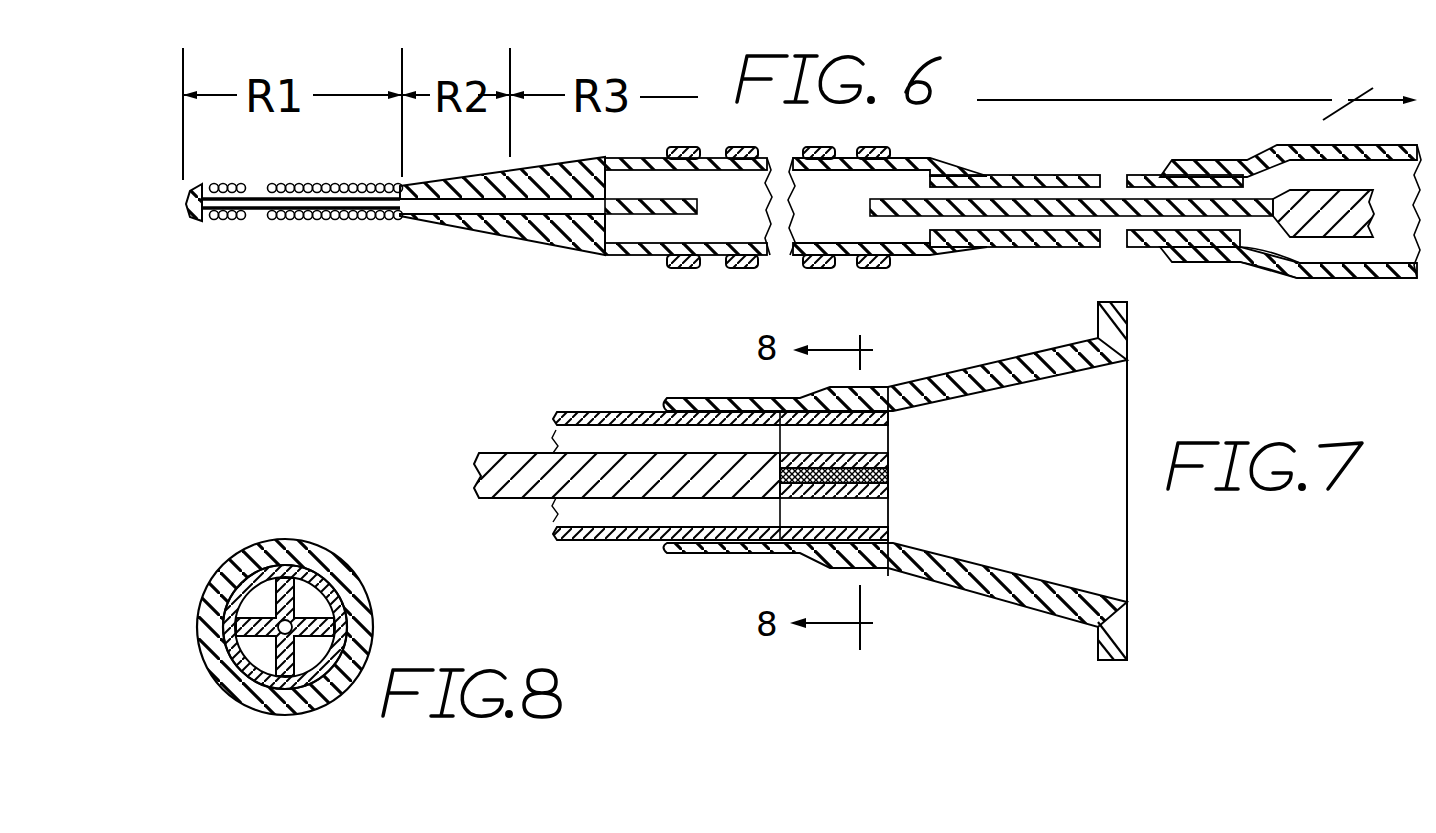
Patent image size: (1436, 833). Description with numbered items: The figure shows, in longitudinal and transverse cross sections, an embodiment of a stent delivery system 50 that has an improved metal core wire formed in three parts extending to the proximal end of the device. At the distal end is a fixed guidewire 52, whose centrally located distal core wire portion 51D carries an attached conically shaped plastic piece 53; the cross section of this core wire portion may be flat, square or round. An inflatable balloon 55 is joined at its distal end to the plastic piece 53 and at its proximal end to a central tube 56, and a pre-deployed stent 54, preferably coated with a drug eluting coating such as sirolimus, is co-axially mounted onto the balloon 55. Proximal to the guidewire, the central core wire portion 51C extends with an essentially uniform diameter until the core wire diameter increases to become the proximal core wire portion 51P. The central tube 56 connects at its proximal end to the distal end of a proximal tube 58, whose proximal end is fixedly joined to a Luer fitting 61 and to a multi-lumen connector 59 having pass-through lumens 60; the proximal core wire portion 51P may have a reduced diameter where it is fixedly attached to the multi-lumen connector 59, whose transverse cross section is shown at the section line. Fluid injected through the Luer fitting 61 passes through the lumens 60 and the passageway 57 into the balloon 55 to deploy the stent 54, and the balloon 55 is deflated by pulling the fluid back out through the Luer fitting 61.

In FIG. 6, the stent delivery system 50 is at (603, 373).
In FIG. 6, the central core wire portion 51C is at (632, 196).
In FIG. 6, the distal core wire portion 51D is at (287, 224).
In FIG. 6, the proximal core wire portion 51P is at (1330, 191).
In FIG. 7, the proximal core wire portion 51P is at (515, 452).
In FIG. 6, the fixed guidewire 52 is at (233, 224).
In FIG. 6, the conically shaped plastic piece 53 is at (470, 246).
In FIG. 6, the pre-deployed stent 54 is at (815, 147).
In FIG. 6, the inflatable balloon 55 is at (835, 268).
In FIG. 6, the central tube 56 is at (1062, 175).
In FIG. 6, the passageway 57 is at (1277, 243).
In FIG. 6, the proximal tube 58 is at (1302, 278).
In FIG. 7, the proximal tube 58 is at (610, 541).
In FIG. 7, the multi-lumen connector 59 is at (890, 421).
In FIG. 8, the multi-lumen connector 59 is at (285, 562).
In FIG. 7, the pass-through lumens 60 is at (855, 512).
In FIG. 8, the pass-through lumens 60 is at (312, 597).
In FIG. 7, the Luer fitting 61 is at (979, 598).
In FIG. 8, the Luer fitting 61 is at (311, 545).